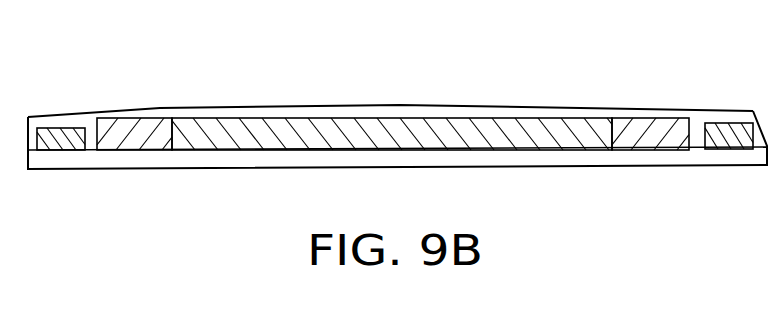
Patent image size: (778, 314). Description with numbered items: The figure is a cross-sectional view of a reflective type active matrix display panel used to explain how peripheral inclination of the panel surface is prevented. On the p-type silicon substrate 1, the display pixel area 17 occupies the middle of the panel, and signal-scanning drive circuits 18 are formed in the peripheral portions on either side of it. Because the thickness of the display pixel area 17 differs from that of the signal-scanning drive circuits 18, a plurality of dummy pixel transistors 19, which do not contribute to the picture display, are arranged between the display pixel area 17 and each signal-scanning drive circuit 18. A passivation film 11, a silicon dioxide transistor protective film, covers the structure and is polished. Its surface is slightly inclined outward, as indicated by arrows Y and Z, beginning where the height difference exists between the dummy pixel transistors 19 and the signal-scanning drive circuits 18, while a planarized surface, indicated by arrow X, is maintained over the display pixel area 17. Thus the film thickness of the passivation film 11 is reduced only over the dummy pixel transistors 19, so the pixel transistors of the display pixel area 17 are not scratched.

The p-type silicon substrate 1 is at (292, 152).
The passivation film 11 is at (472, 105).
The display pixel area 17 is at (240, 118).
The dummy pixel transistors 19 is at (162, 118).
The signal-scanning drive circuits 18 is at (54, 127).
The arrow X is at (365, 100).
The arrow Y is at (100, 101).
The arrow Z is at (674, 100).